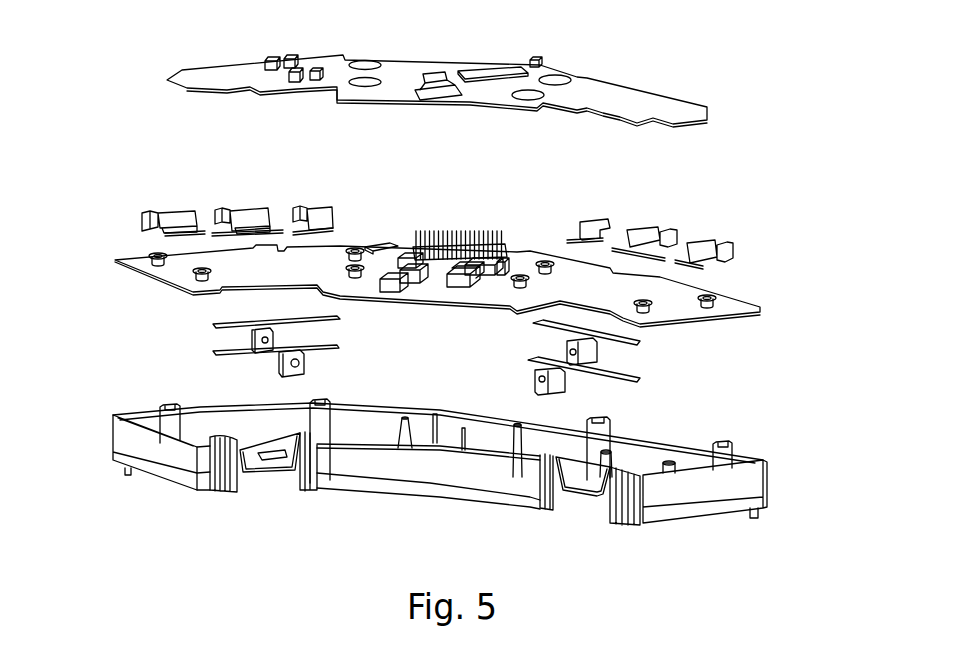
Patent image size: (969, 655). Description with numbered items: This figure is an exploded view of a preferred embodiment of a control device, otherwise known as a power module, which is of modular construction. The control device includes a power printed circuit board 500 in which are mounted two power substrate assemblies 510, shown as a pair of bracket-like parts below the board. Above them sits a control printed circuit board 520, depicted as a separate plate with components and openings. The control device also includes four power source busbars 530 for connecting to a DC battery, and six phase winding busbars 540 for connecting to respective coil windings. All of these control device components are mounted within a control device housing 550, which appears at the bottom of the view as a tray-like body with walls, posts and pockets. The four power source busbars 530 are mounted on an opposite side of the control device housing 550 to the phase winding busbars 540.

The power printed circuit board 500 is at (436, 308).
The power substrate assembly 510 is at (188, 266).
The control printed circuit board 520 is at (583, 95).
The power source busbar 530 is at (213, 352).
The phase winding busbar 540 is at (293, 210).
The control device housing 550 is at (666, 512).